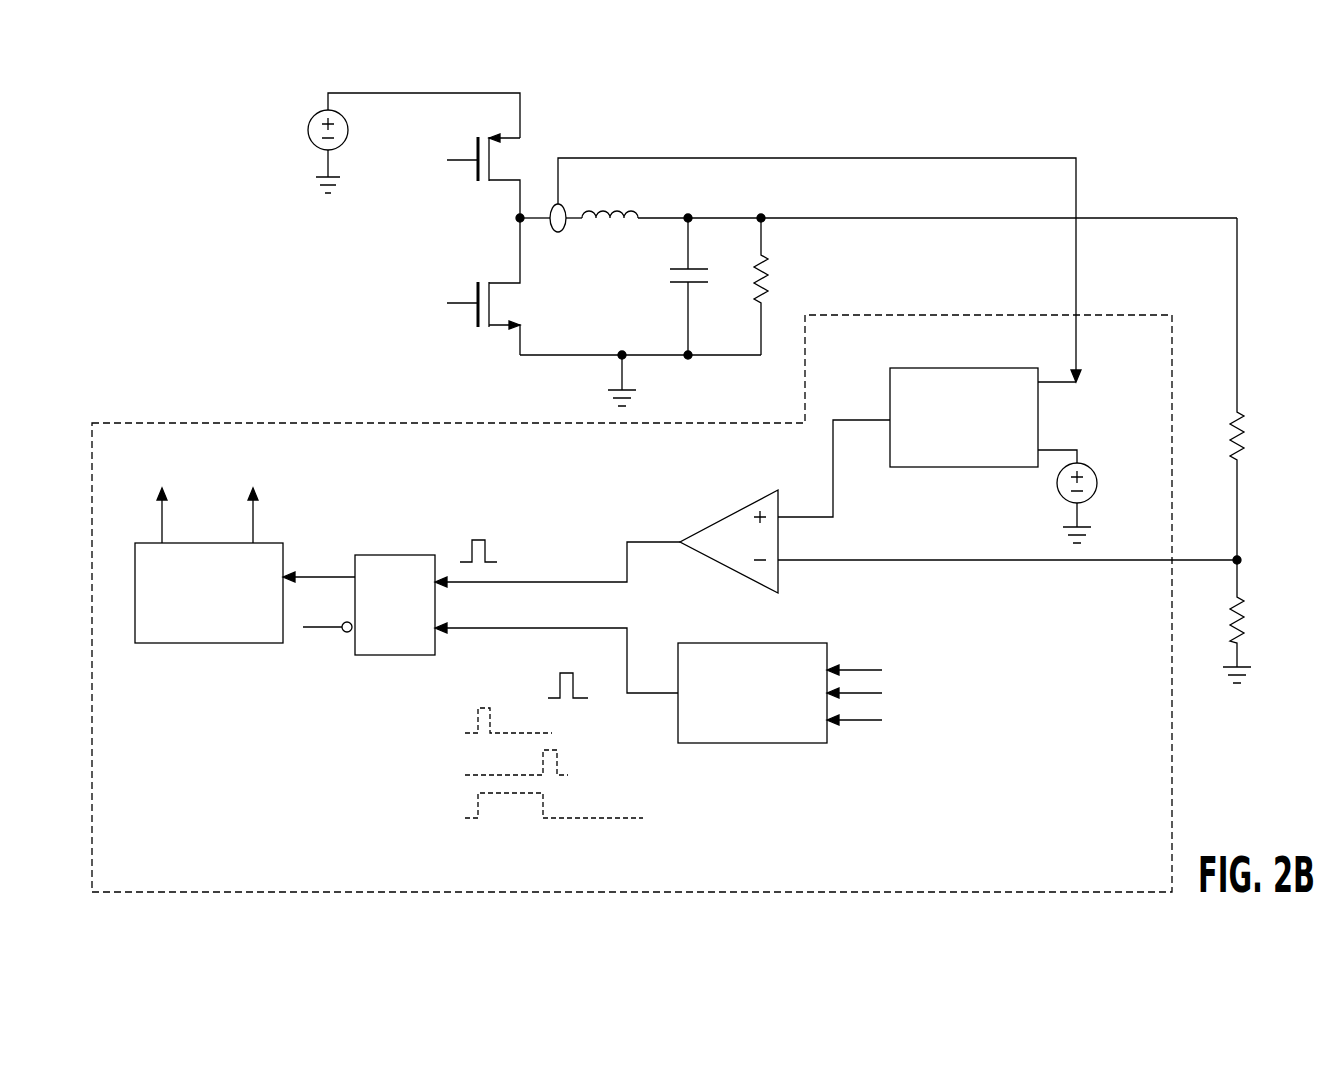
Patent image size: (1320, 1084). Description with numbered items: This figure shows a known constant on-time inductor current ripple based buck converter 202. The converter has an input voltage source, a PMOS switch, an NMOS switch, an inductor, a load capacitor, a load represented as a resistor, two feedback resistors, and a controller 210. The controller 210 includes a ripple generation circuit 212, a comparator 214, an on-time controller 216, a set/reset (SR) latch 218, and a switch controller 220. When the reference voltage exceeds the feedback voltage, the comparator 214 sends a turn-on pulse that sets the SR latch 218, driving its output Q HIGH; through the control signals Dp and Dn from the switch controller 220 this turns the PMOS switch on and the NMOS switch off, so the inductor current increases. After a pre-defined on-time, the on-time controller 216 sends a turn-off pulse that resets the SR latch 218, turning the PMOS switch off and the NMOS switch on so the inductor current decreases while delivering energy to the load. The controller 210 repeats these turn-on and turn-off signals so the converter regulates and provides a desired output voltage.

The buck converter 202 is at (1272, 135).
The controller 210 is at (1172, 745).
The ripple generation circuit 212 is at (985, 468).
The comparator 214 is at (732, 512).
The on-time controller 216 is at (768, 744).
The set/reset (SR) latch 218 is at (396, 555).
The switch controller 220 is at (208, 644).